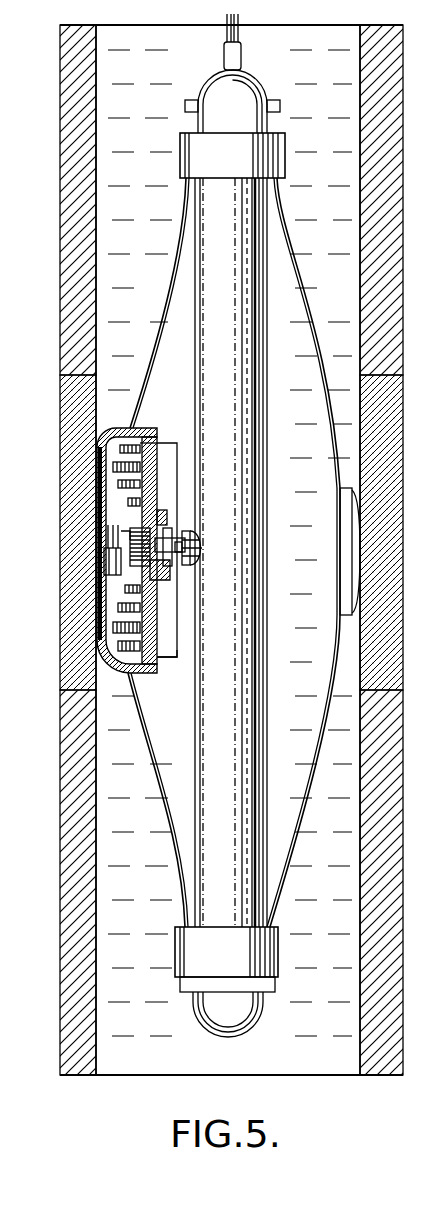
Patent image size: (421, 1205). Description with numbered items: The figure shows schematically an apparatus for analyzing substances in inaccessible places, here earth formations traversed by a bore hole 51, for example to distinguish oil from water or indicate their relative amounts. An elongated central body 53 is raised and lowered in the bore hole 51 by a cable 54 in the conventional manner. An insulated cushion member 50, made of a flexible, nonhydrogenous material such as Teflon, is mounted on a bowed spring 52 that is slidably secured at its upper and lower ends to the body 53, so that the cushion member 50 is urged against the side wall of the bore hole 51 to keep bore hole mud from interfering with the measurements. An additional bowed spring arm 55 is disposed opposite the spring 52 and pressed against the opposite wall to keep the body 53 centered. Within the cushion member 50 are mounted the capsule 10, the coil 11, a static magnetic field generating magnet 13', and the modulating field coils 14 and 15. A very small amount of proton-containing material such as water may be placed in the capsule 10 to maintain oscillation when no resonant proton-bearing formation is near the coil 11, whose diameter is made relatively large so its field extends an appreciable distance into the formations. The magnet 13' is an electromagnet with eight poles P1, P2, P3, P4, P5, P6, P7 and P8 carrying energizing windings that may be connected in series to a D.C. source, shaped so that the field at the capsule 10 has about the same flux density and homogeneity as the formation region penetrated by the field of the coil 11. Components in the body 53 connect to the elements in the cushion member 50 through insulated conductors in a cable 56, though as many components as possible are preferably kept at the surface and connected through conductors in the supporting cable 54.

The bore hole 51 is at (358, 1062).
The cable 54 is at (241, 50).
The elongated central body 53 is at (200, 694).
The bowed spring 52 is at (172, 306).
The bowed spring arm 55 is at (303, 306).
The insulated cushion member 50 is at (148, 427).
The pole P1 is at (120, 449).
The pole P2 is at (113, 467).
The pole P3 is at (118, 484).
The pole P4 is at (128, 502).
The pole P5 is at (125, 589).
The pole P6 is at (118, 608).
The pole P7 is at (113, 628).
The pole P8 is at (118, 646).
The coil 11 is at (106, 532).
The capsule 10 is at (103, 557).
The modulating field coil 14 is at (150, 531).
The modulating field coil 15 is at (155, 572).
The cable 56 is at (199, 553).
The static magnetic field generating magnet 13' is at (196, 642).